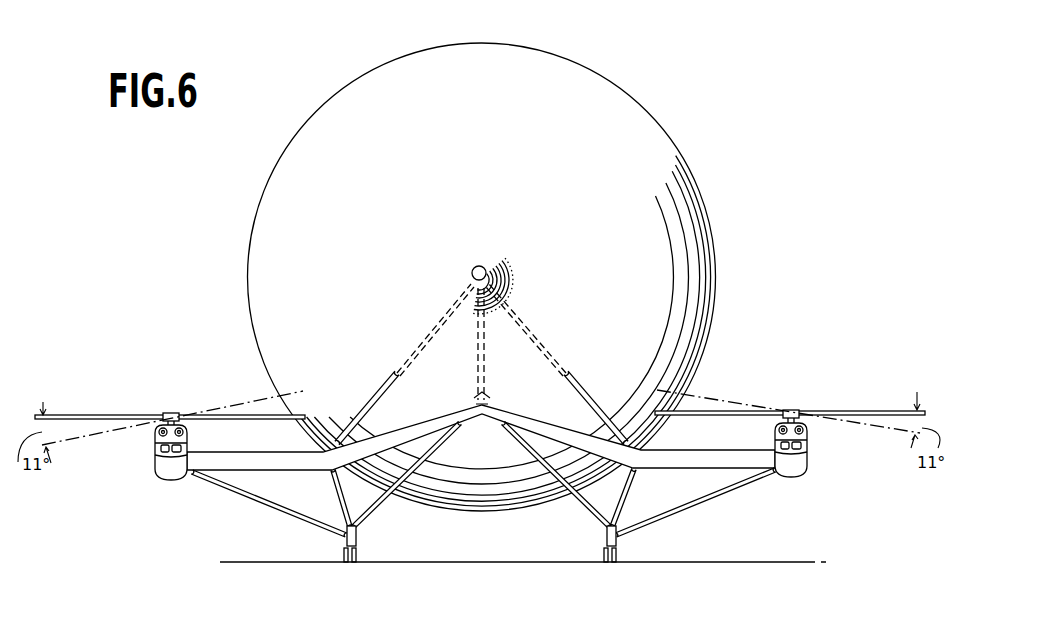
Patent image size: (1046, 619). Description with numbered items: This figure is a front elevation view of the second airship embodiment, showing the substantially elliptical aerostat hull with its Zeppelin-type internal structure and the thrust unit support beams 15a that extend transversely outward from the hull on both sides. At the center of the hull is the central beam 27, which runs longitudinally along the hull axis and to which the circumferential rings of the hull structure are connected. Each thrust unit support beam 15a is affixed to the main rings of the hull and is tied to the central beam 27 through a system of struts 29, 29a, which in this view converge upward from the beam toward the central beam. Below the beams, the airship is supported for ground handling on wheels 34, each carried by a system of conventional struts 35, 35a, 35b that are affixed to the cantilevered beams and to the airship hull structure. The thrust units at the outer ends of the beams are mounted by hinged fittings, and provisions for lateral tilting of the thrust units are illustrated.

The thrust unit support beam 15a is at (238, 463).
The central beam 27 is at (480, 266).
The strut 29 is at (383, 385).
The strut 29a is at (487, 347).
The wheel 34 is at (357, 548).
The strut 35 is at (334, 500).
The strut 35a is at (270, 505).
The strut 35b is at (387, 495).